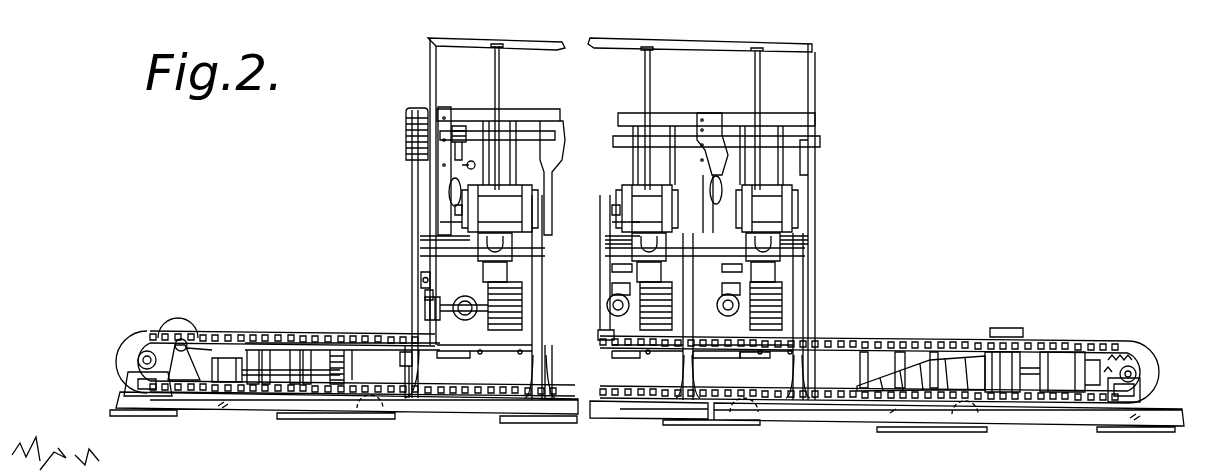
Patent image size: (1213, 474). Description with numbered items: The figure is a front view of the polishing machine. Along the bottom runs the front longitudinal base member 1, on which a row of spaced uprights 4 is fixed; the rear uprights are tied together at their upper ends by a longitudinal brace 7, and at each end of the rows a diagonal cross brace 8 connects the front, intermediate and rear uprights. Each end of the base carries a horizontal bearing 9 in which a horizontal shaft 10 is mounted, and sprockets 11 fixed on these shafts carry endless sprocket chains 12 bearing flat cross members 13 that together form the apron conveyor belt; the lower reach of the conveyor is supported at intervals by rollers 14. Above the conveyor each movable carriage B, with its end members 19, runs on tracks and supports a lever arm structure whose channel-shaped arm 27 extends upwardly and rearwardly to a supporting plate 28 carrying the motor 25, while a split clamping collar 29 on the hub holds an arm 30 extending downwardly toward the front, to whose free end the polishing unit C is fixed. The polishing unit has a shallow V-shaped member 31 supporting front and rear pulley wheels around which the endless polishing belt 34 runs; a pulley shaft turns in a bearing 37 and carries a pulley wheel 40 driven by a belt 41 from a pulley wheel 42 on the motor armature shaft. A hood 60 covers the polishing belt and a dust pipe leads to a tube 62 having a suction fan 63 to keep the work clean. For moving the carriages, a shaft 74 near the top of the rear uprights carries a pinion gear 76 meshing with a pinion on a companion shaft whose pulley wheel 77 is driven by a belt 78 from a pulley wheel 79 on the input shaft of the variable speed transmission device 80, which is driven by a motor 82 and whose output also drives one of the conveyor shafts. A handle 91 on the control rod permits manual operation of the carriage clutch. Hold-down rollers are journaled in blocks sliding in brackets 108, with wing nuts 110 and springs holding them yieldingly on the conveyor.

The front longitudinal base member 1 is at (118, 400).
The front uprights 4 is at (430, 258).
The longitudinal brace 7 is at (520, 130).
The diagonal cross brace 8 is at (430, 192).
The horizontal bearing 9 is at (124, 367).
The horizontal shaft 10 is at (136, 334).
The sprockets 11 is at (150, 333).
The endless sprocket chains 12 is at (230, 333).
The flat cross members 13 is at (325, 334).
The rollers 14 is at (358, 410).
The end members 19 is at (632, 248).
The motor 25 is at (500, 208).
The channel-shaped arm 27 is at (620, 236).
The supporting plate 28 is at (430, 236).
The split clamping collar 29 is at (612, 268).
The arm 30 is at (612, 289).
The V-shaped member 31 is at (476, 314).
The endless polishing belt 34 is at (506, 336).
The bearing 37 is at (424, 302).
The pulley wheel 40 is at (426, 318).
The belt 41 is at (440, 222).
The pulley wheel 42 is at (440, 207).
The hood 60 is at (480, 347).
The tube 62 is at (900, 377).
The suction fan 63 is at (1010, 329).
The shaft 74 is at (718, 140).
The pinion gear 76 is at (458, 128).
The pulley wheel 77 is at (406, 138).
The belt 78 is at (411, 168).
The pulley wheel 79 is at (400, 360).
The variable speed transmission device 80 is at (352, 343).
The motor 82 is at (283, 374).
The handle 91 is at (420, 290).
The brackets 108 is at (606, 267).
The wing nuts 110 is at (758, 356).
The movable carriage B is at (666, 246).
The polishing unit C is at (500, 347).